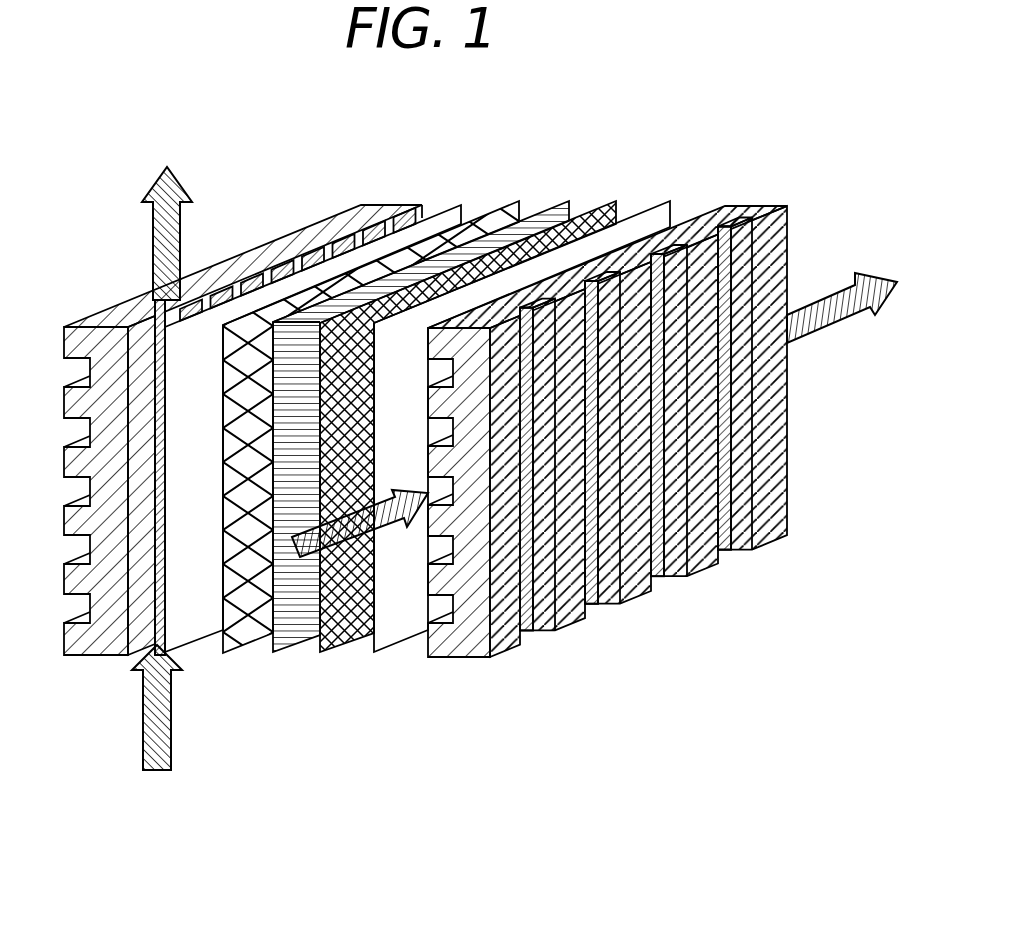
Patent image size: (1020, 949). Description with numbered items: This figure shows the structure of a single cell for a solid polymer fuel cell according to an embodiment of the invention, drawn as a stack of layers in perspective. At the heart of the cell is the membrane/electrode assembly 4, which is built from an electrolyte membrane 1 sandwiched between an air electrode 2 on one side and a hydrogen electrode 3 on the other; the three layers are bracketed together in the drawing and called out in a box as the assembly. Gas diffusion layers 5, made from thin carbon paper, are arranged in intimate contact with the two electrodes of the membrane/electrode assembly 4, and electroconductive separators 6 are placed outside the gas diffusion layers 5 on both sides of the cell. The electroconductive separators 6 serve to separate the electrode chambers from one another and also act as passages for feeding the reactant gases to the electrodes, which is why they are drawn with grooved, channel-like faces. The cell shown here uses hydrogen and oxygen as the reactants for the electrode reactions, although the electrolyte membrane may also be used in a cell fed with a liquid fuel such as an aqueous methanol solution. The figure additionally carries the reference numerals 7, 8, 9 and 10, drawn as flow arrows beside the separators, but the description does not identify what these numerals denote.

The electrolyte membrane 1 is at (277, 652).
The air electrode 2 is at (468, 514).
The hydrogen electrode 3 is at (223, 653).
The membrane/electrode assembly 4 is at (416, 565).
The gas diffusion layers 5 is at (462, 200).
The electroconductive separators 6 is at (64, 406).
The oxidant gas flow 7 is at (345, 531).
The fuel gas flow 8 is at (855, 302).
The cooling water inlet flow 9 is at (157, 729).
The cooling water outlet flow 10 is at (167, 217).